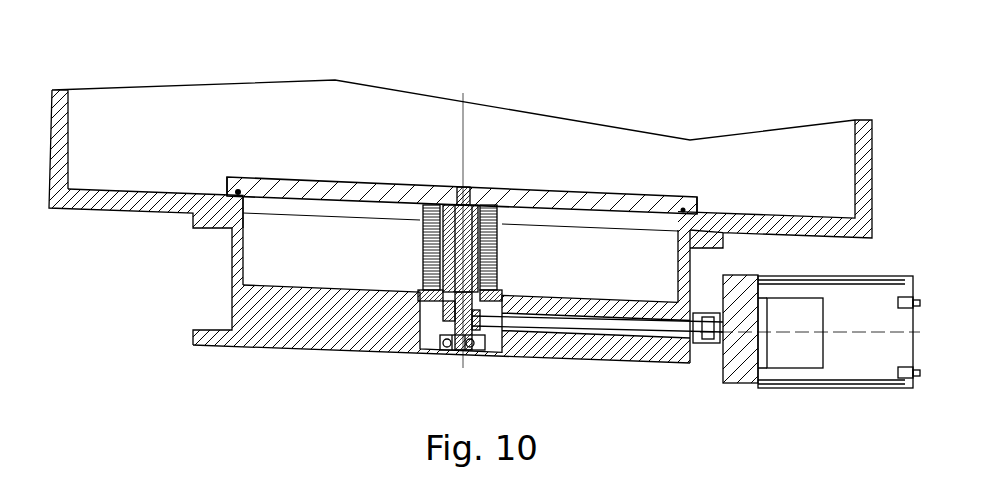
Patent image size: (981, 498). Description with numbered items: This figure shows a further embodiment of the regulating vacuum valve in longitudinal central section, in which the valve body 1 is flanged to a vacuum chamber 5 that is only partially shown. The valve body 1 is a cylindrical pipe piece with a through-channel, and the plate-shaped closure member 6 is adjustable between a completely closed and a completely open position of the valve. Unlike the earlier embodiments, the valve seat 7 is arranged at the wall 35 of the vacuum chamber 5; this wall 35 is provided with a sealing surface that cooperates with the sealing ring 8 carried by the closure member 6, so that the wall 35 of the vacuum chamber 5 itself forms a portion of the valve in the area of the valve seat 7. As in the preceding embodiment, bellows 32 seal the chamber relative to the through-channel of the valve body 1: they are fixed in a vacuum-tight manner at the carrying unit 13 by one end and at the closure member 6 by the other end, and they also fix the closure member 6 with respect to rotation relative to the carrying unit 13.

The valve body 1 is at (237, 268).
The vacuum chamber 5 is at (112, 218).
The closure member 6 is at (358, 186).
The valve seat 7 is at (696, 196).
The sealing ring 8 is at (240, 190).
The carrying unit 13 is at (380, 358).
The bellows 32 is at (340, 350).
The wall 35 is at (175, 205).